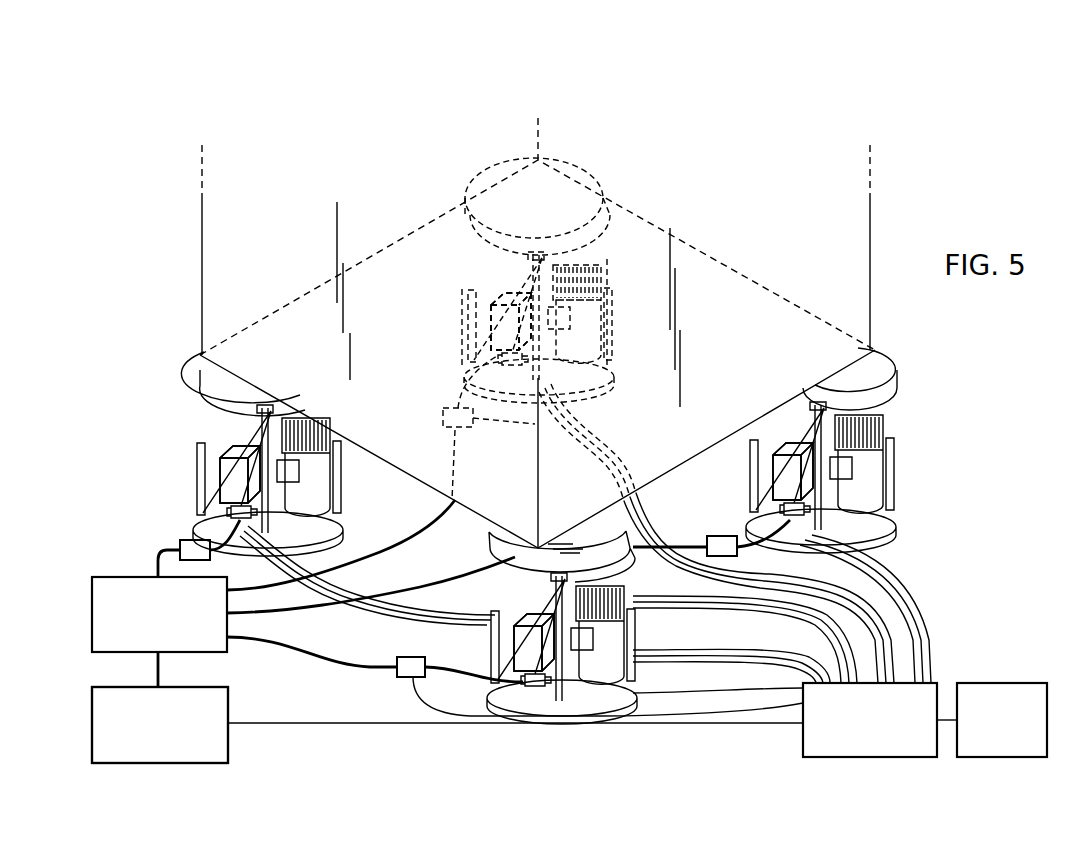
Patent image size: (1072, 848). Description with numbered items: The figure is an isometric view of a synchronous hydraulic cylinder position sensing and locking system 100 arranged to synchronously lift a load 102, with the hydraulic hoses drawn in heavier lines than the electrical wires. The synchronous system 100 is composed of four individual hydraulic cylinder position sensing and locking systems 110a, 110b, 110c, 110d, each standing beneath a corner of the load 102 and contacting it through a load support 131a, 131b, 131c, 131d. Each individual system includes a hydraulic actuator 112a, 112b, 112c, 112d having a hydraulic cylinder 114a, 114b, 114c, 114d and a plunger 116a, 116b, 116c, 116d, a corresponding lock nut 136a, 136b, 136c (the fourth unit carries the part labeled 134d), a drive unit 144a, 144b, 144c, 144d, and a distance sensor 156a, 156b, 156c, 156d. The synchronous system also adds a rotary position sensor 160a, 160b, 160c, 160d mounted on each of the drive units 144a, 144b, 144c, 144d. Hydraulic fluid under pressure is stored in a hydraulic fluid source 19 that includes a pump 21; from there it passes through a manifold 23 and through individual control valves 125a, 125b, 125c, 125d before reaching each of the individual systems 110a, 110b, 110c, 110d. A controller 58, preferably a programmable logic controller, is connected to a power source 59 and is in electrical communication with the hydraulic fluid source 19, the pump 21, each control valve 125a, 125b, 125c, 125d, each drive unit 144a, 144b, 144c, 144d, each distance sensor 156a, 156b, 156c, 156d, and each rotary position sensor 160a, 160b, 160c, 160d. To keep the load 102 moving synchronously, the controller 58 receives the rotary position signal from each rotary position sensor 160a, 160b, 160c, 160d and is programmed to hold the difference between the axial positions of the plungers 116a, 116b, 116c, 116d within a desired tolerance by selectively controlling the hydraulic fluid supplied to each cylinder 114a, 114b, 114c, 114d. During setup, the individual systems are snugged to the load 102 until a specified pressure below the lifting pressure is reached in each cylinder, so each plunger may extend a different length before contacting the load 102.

The synchronous hydraulic cylinder position sensing and locking system 100 is at (277, 90).
The load 102 is at (712, 332).
The hydraulic cylinder position sensing and locking system 110a is at (263, 385).
The hydraulic cylinder position sensing and locking system 110b is at (516, 325).
The hydraulic cylinder position sensing and locking system 110c is at (864, 349).
The hydraulic cylinder position sensing and locking system 110d is at (572, 665).
The load support 131a is at (200, 358).
The load support 131b is at (580, 172).
The load support 131c is at (885, 356).
The load support 131d is at (612, 525).
The lock nut 136a is at (213, 405).
The lock nut 136b is at (492, 248).
The lock nut 136c is at (805, 418).
The bracket 134d is at (540, 578).
The distance sensor 156a is at (233, 414).
The distance sensor 156b is at (508, 257).
The distance sensor 156c is at (790, 409).
The distance sensor 156d is at (490, 561).
The hydraulic actuator 112a is at (248, 430).
The hydraulic actuator 112b is at (512, 282).
The hydraulic actuator 112c is at (805, 437).
The hydraulic actuator 112d is at (543, 594).
The hydraulic cylinder 114a is at (184, 473).
The hydraulic cylinder 114b is at (471, 317).
The hydraulic cylinder 114c is at (757, 471).
The hydraulic cylinder 114d is at (492, 642).
The plunger 116a is at (179, 472).
The plunger 116b is at (465, 316).
The plunger 116c is at (751, 471).
The plunger 116d is at (487, 642).
The drive unit 144a is at (355, 474).
The drive unit 144b is at (622, 297).
The drive unit 144c is at (915, 464).
The drive unit 144d is at (640, 640).
The rotary position sensor 160a is at (325, 523).
The rotary position sensor 160b is at (575, 368).
The rotary position sensor 160c is at (900, 522).
The rotary position sensor 160d is at (598, 684).
The control valve 125a is at (178, 543).
The control valve 125b is at (443, 413).
The control valve 125c is at (707, 536).
The control valve 125d is at (403, 660).
The manifold 23 is at (92, 588).
The hydraulic fluid source 19 is at (108, 758).
The pump 21 is at (222, 758).
The controller 58 is at (850, 760).
The power source 59 is at (1005, 760).